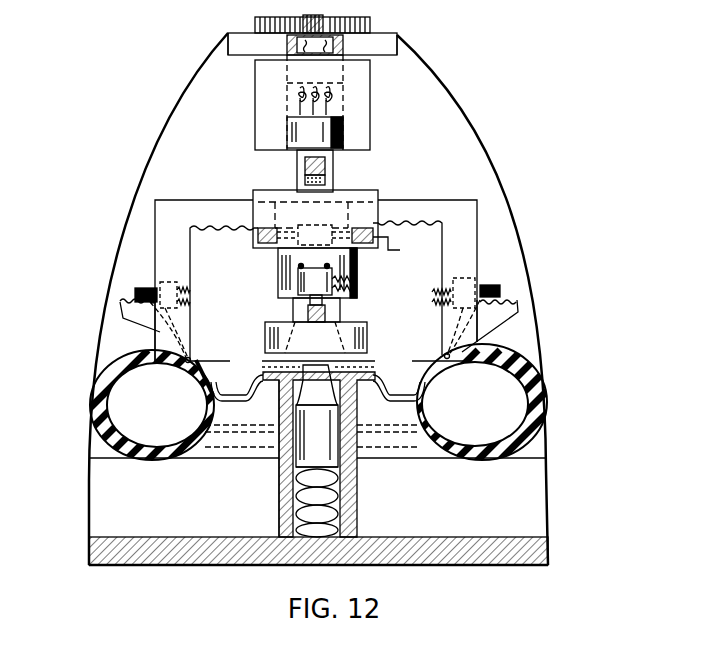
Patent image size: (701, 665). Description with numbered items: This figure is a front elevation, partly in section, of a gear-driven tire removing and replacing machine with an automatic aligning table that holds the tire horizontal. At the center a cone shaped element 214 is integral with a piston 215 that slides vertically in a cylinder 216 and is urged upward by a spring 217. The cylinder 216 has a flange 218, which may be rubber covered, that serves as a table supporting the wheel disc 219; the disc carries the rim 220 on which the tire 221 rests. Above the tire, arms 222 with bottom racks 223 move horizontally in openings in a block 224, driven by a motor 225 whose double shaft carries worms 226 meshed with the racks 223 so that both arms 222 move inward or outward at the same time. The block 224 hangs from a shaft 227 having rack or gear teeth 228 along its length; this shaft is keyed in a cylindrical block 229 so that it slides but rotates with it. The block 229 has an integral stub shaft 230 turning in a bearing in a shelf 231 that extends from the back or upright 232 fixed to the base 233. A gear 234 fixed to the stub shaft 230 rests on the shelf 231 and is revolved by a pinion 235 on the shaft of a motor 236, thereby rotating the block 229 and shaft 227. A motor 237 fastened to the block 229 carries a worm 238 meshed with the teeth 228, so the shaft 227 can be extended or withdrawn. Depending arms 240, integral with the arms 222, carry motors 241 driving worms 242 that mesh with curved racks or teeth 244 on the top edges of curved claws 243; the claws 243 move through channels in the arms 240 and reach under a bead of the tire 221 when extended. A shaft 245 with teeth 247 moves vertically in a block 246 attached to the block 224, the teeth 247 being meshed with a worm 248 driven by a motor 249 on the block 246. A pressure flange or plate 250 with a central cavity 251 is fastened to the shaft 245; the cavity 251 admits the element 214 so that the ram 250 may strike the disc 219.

The cone shaped element 214 is at (343, 365).
The piston 215 is at (343, 457).
The cylinder 216 is at (358, 492).
The spring 217 is at (345, 523).
The flange 218 is at (270, 396).
The wheel disc 219 is at (230, 407).
The rim 220 is at (211, 385).
The tire 221 is at (133, 457).
The arms 222 is at (175, 200).
The bottom racks 223 is at (232, 230).
The block 224 is at (252, 194).
The motor 225 is at (283, 228).
The worms 226 is at (264, 246).
The shaft 227 is at (297, 172).
The rack or gear teeth 228 is at (333, 182).
The cylindrical block 229 is at (372, 92).
The stub shaft 230 is at (283, 57).
The shelf 231 is at (398, 48).
The back or upright 232 is at (143, 149).
The base 233 is at (178, 536).
The gear 234 is at (372, 25).
The pinion 235 is at (327, 17).
The motor 236 is at (268, 31).
The motor 237 is at (343, 127).
The worm 238 is at (323, 168).
The depending arms 240 is at (155, 243).
The motors 241 is at (169, 282).
The worms 242 is at (135, 292).
The curved claws 243 is at (170, 337).
The curved racks or teeth 244 is at (120, 300).
The shaft 245 is at (292, 308).
The block 246 is at (355, 286).
The teeth 247 is at (325, 300).
The worm 248 is at (322, 316).
The motor 249 is at (298, 282).
The pressure flange or plate 250 is at (266, 332).
The central cavity 251 is at (300, 338).